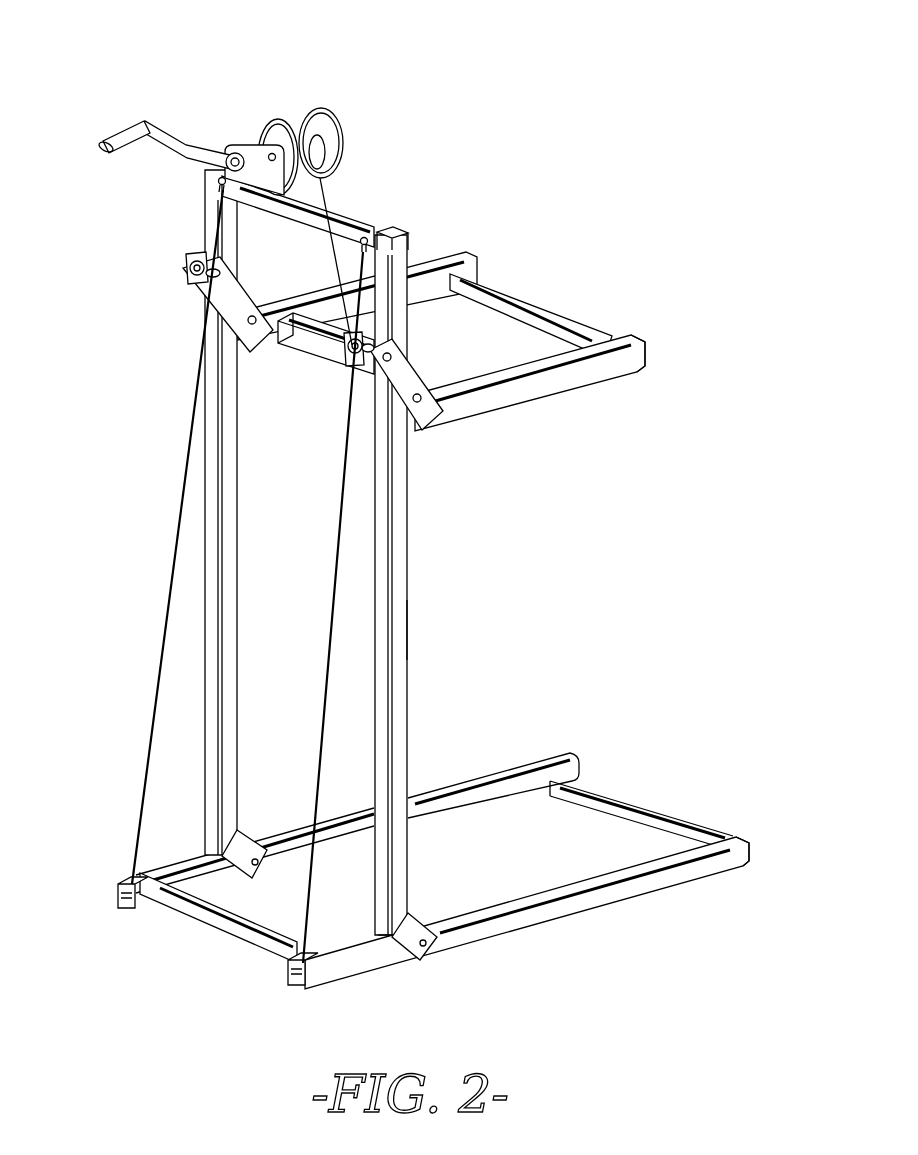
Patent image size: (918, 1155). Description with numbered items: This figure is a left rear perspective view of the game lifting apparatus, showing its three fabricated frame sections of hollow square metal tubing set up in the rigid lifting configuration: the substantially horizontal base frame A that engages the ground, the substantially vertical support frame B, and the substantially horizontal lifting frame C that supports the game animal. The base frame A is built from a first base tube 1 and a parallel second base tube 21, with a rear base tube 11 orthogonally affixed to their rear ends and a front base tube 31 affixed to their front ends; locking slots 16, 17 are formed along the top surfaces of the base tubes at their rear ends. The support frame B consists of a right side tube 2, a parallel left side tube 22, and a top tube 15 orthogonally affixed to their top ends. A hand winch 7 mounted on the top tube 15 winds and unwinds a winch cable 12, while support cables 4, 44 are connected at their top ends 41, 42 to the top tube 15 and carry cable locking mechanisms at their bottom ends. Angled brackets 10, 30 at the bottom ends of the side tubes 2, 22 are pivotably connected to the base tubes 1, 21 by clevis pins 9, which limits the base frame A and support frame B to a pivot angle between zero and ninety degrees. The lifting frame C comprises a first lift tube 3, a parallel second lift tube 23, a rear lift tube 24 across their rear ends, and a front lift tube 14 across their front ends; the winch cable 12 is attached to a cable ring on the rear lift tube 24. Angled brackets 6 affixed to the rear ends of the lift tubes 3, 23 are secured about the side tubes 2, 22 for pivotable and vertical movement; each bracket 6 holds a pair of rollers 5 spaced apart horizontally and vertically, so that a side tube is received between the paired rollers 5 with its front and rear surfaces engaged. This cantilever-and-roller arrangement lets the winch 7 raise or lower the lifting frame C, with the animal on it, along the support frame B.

The first base tube 1 is at (470, 778).
The right side tube 2 is at (240, 573).
The left side tube 22 is at (409, 568).
The first lift tube 3 is at (467, 249).
The support cable 4 is at (165, 654).
The support cable 44 is at (329, 664).
The winch cable 12 is at (338, 263).
The rollers 5 is at (194, 262).
The angled brackets 6 is at (257, 291).
The hand winch 7 is at (269, 110).
The clevis pins 9 is at (263, 872).
The angled bracket 10 is at (405, 958).
The rear base tube 11 is at (223, 932).
The second base tube 21 is at (565, 923).
The front base tube 31 is at (652, 813).
The angled bracket 30 is at (230, 872).
The front lift tube 14 is at (549, 304).
The top tube 15 is at (364, 207).
The locking slot 16 is at (118, 878).
The locking slot 17 is at (286, 974).
The second lift tube 23 is at (570, 397).
The rear lift tube 24 is at (312, 360).
The top end of support cable 41 is at (217, 184).
The top end of support cable 42 is at (357, 241).
The base frame A is at (747, 833).
The support frame B is at (409, 635).
The lifting frame C is at (647, 337).